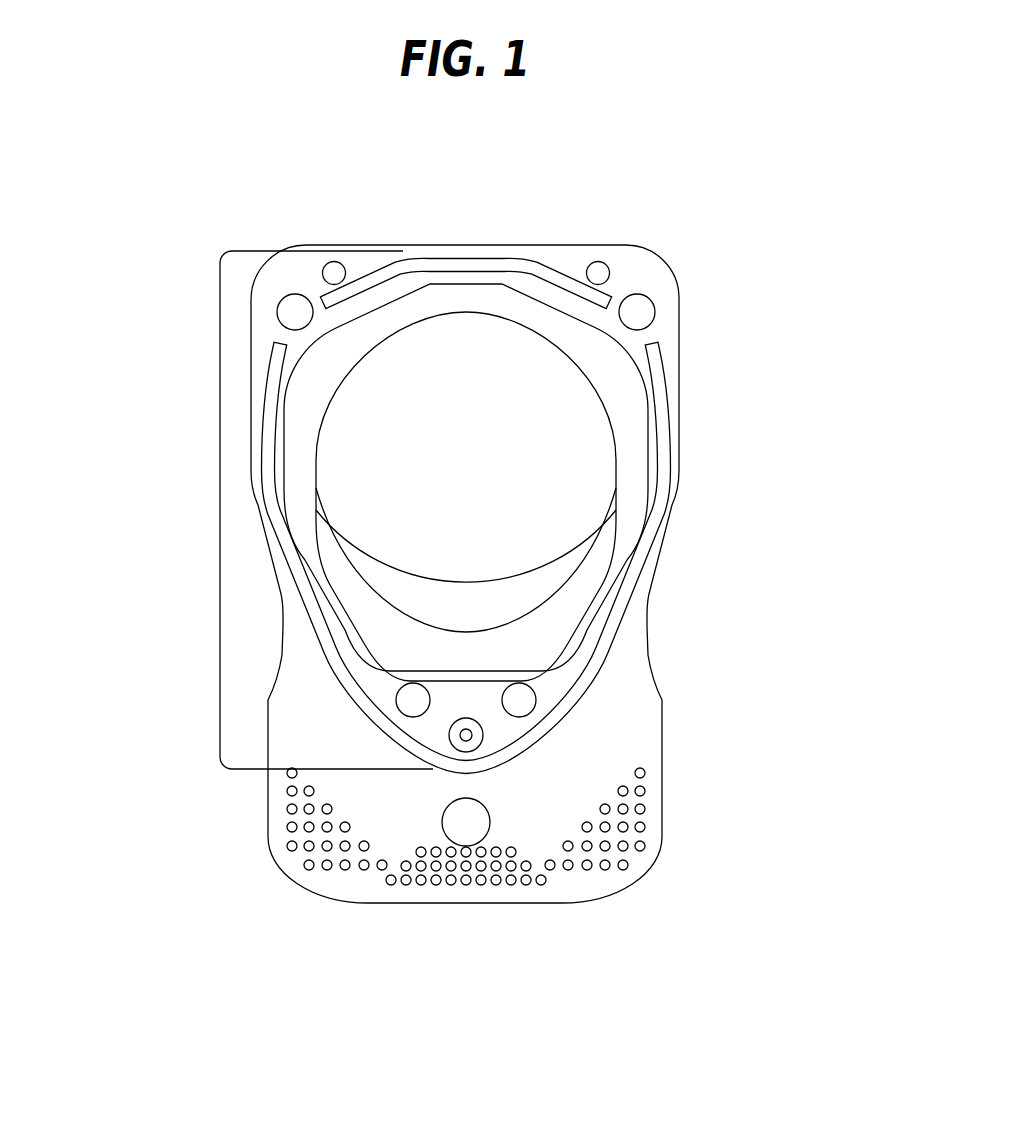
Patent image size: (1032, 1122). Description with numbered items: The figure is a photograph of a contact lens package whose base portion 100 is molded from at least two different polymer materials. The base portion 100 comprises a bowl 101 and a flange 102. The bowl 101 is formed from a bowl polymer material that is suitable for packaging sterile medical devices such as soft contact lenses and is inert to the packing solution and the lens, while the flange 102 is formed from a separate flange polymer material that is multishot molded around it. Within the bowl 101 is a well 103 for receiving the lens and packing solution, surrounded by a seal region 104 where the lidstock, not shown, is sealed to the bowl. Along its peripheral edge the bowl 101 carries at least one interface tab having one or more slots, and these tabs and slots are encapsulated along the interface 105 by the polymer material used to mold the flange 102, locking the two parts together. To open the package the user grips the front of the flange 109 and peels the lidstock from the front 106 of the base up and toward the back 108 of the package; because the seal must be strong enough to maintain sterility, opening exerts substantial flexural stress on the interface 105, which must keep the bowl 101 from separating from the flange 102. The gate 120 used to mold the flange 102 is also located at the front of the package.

The base portion 100 is at (720, 358).
The bowl 101 is at (207, 452).
The flange 102 is at (247, 799).
The well 103 is at (552, 467).
The seal region 104 is at (362, 656).
The interface 105 is at (643, 577).
The front 106 is at (489, 711).
The back 108 is at (564, 410).
The front of the flange 109 is at (546, 903).
The gate 120 is at (460, 868).